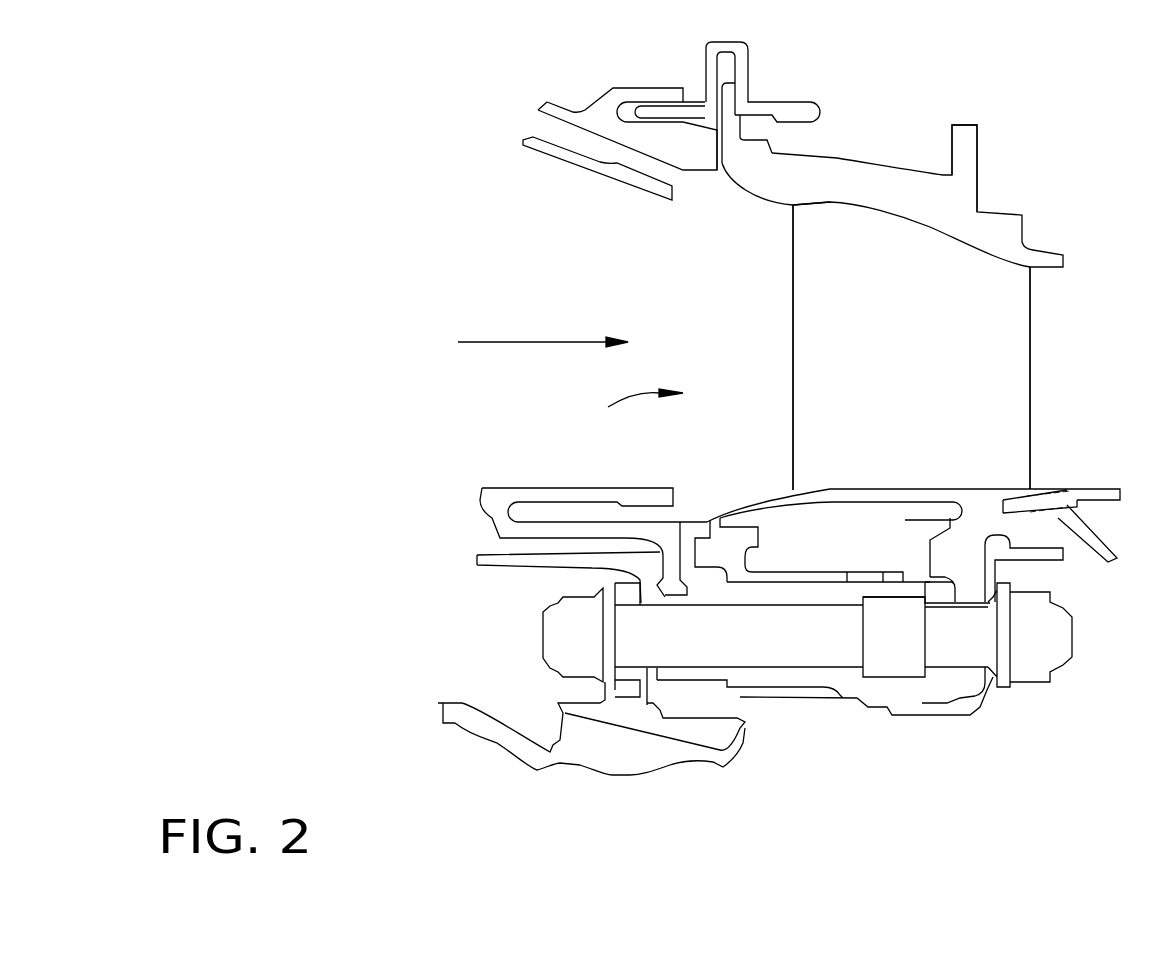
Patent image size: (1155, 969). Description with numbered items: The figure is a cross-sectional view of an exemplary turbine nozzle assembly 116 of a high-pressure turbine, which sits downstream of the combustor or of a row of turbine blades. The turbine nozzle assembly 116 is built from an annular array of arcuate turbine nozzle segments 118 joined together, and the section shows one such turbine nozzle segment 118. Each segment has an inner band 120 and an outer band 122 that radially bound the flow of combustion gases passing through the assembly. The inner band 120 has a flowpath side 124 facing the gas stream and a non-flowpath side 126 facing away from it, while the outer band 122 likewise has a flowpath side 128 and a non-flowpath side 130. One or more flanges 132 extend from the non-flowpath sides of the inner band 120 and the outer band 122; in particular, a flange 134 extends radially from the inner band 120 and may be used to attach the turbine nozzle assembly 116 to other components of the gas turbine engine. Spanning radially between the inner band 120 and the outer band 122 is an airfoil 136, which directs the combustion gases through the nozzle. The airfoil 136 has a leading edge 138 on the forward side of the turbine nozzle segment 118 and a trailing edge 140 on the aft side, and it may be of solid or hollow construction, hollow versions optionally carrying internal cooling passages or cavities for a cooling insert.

The turbine nozzle assembly 116 is at (503, 342).
The turbine nozzle segment 118 is at (625, 407).
The inner band 120 is at (758, 498).
The outer band 122 is at (752, 170).
The flowpath side 124 is at (830, 488).
The non-flowpath side 126 is at (877, 503).
The flowpath side 128 is at (806, 207).
The non-flowpath side 130 is at (838, 158).
The flange 132 is at (967, 150).
The flange 134 is at (968, 565).
The airfoil 136 is at (932, 388).
The leading edge 138 is at (792, 321).
The trailing edge 140 is at (1032, 330).